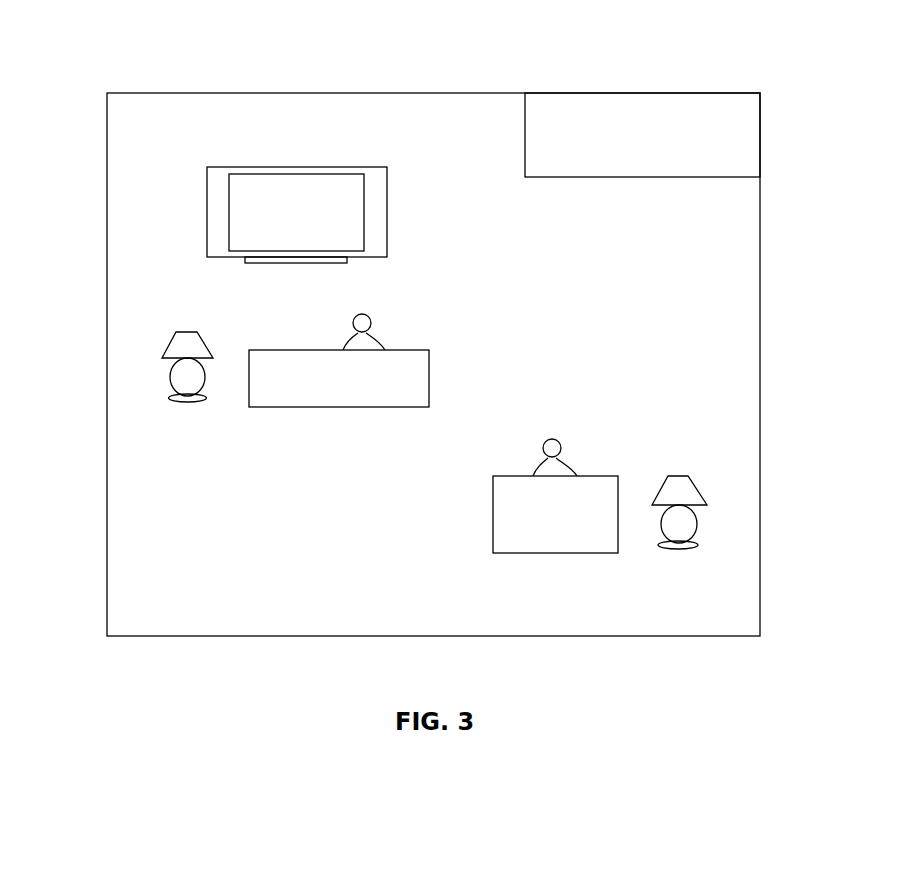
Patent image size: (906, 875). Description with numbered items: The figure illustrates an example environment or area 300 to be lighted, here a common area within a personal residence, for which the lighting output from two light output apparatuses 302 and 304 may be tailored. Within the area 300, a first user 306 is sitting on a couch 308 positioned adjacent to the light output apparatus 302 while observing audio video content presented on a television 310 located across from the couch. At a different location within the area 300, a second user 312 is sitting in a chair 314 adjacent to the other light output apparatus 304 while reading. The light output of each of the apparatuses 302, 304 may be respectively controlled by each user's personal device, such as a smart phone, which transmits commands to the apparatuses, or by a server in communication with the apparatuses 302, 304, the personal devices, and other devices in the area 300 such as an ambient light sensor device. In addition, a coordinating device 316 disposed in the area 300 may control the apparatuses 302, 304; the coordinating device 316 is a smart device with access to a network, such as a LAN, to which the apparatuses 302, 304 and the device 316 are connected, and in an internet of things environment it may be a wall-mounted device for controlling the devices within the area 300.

The environment or area 300 is at (105, 120).
The light output apparatus 302 is at (200, 334).
The light output apparatus 304 is at (690, 477).
The first user 306 is at (372, 322).
The couch 308 is at (339, 378).
The television 310 is at (387, 192).
The second user 312 is at (563, 448).
The chair 314 is at (555, 514).
The coordinating device 316 is at (642, 135).